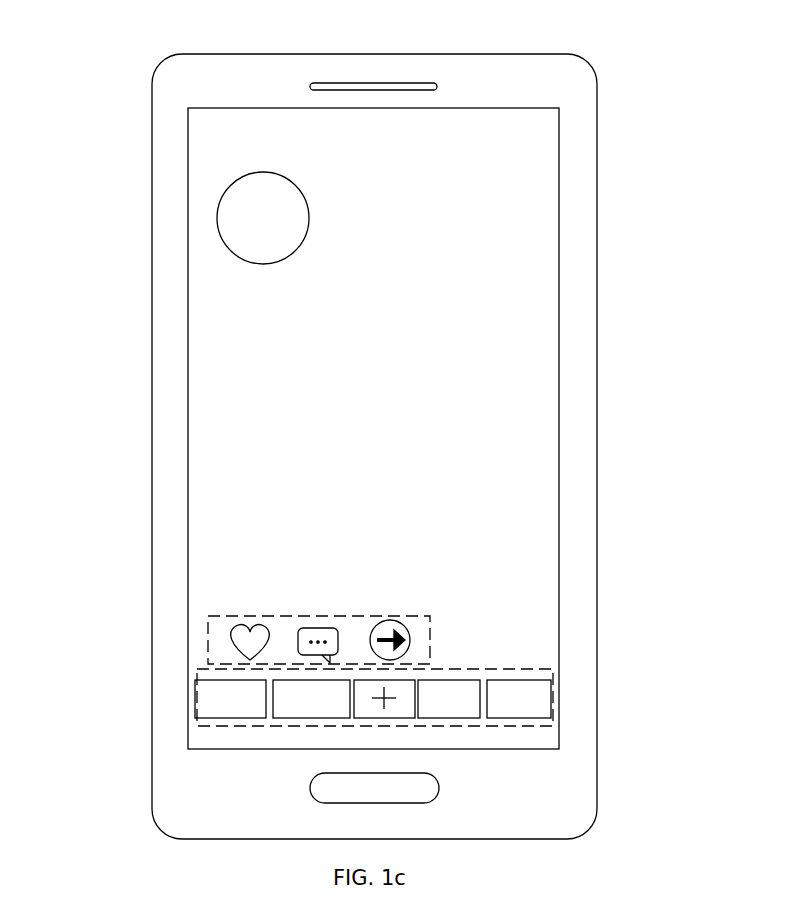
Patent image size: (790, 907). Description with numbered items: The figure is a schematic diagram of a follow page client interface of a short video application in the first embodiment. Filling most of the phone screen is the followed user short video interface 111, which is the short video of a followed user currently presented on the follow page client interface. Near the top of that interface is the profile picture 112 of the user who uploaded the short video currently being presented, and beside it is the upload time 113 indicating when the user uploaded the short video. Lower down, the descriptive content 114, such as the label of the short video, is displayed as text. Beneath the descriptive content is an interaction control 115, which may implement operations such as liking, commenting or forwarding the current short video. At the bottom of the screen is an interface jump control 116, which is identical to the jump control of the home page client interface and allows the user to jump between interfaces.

The followed user short video interface 111 is at (207, 385).
The profile picture 112 is at (221, 200).
The upload time 113 is at (410, 238).
The descriptive content 114 is at (205, 555).
The interaction control 115 is at (207, 640).
The interface jump control 116 is at (203, 700).